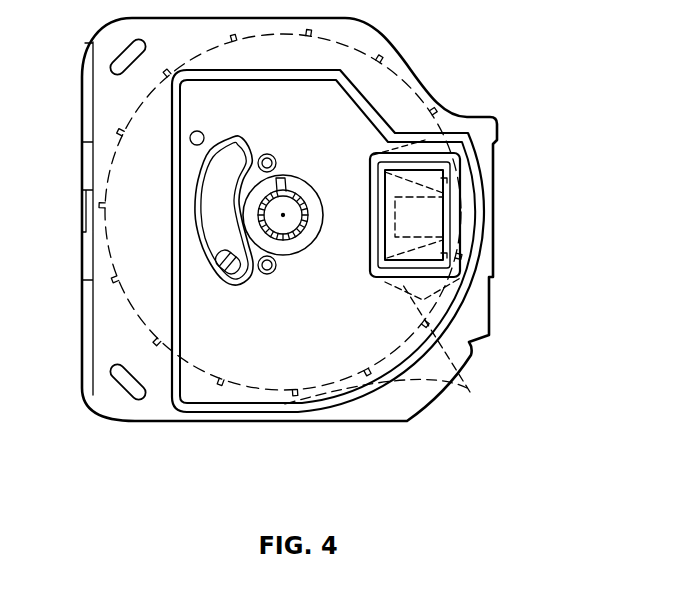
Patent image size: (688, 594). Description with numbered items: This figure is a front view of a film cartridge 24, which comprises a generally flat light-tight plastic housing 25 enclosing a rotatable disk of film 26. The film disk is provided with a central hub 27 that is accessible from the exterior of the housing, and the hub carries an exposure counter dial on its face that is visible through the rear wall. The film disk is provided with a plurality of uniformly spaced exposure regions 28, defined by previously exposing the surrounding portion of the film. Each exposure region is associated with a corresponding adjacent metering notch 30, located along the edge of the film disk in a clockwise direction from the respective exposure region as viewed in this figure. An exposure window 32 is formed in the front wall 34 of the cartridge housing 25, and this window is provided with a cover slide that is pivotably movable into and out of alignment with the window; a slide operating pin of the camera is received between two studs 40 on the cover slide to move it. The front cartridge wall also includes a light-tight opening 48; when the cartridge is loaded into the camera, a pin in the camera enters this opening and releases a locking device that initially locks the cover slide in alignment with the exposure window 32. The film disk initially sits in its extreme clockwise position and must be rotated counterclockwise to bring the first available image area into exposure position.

The film cartridge 24 is at (513, 146).
The cartridge housing 25 is at (312, 300).
The disk of film 26 is at (108, 178).
The central hub 27 is at (300, 200).
The exposure regions 28 is at (470, 283).
The metering notch 30 is at (447, 348).
The exposure window 32 is at (455, 163).
The front wall 34 is at (106, 105).
The studs 40 is at (224, 259).
The light-tight opening 48 is at (203, 132).